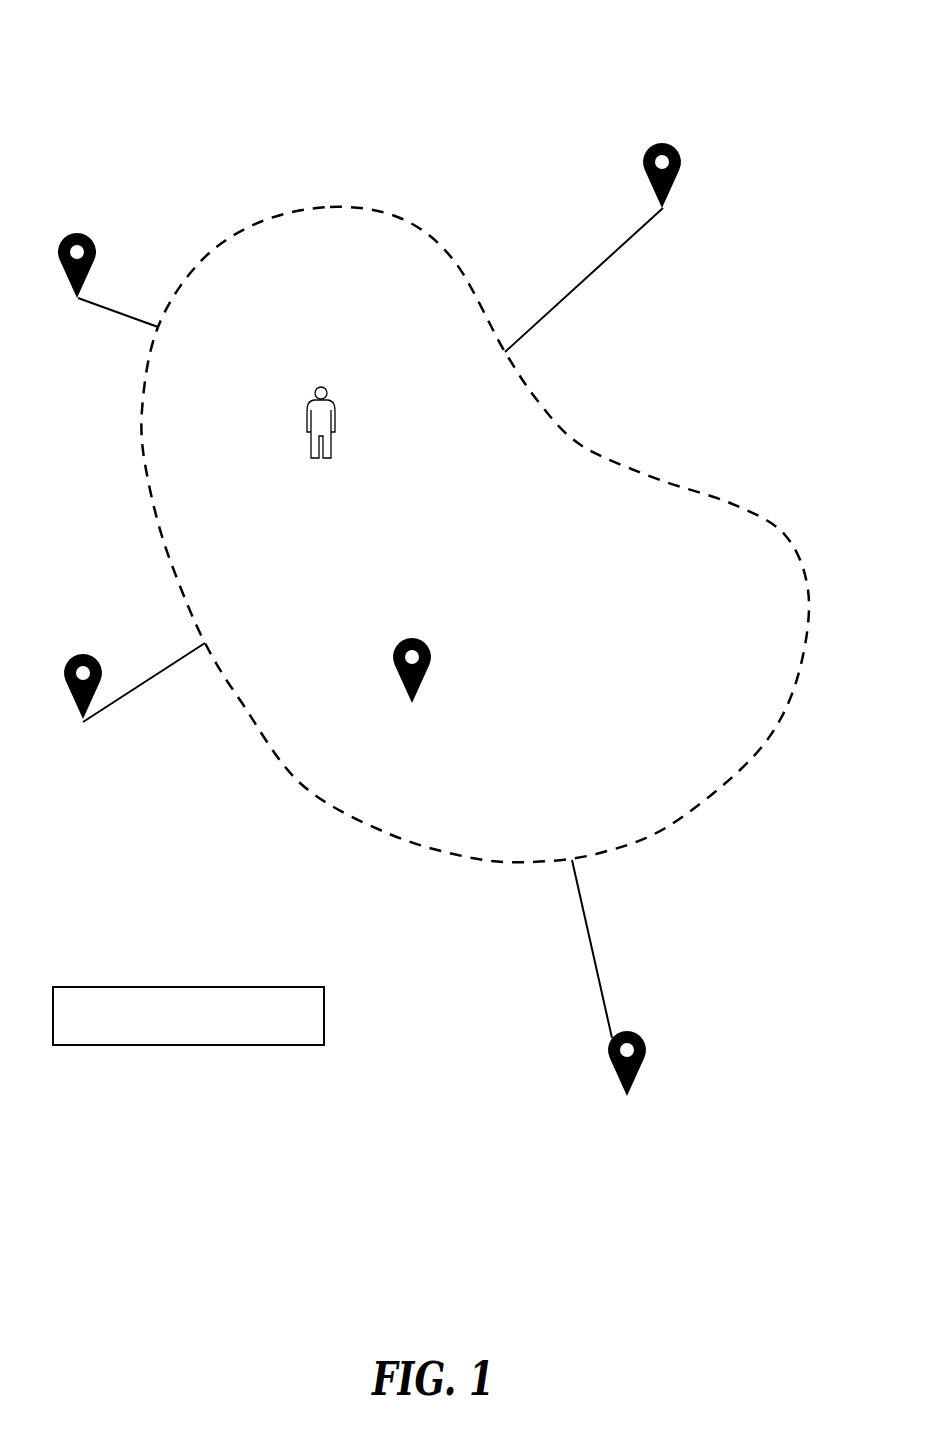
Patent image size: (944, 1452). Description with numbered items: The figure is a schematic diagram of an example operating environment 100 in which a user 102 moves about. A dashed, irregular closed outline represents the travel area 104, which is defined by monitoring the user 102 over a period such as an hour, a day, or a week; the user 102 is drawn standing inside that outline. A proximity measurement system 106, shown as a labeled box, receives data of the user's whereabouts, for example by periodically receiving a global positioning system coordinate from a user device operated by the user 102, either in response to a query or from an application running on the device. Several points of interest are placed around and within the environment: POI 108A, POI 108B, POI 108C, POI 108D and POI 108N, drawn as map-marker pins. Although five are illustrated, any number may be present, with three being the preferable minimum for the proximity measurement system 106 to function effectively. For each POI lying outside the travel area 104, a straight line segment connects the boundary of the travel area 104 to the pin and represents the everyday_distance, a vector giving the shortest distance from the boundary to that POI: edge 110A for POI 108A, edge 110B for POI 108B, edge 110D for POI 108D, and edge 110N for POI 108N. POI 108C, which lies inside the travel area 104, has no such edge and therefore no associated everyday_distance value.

The operating environment 100 is at (793, 62).
The user 102 is at (335, 416).
The travel area 104 is at (606, 456).
The proximity measurement system 106 is at (325, 1013).
The point of interest 108A is at (84, 658).
The point of interest 108B is at (647, 1050).
The point of interest 108C is at (433, 655).
The point of interest 108D is at (80, 234).
The point of interest 108N is at (685, 155).
The edge 110A is at (135, 688).
The edge 110B is at (595, 955).
The edge 110D is at (117, 308).
The edge 110N is at (595, 276).